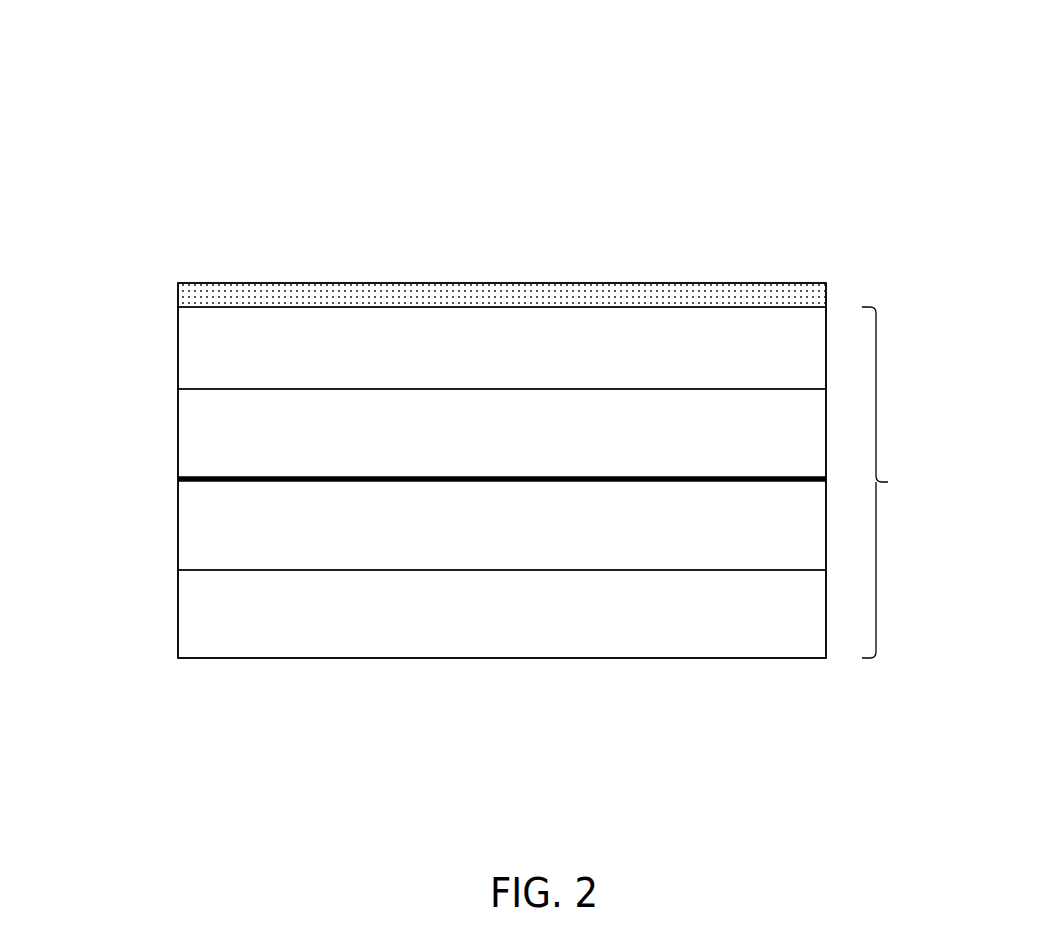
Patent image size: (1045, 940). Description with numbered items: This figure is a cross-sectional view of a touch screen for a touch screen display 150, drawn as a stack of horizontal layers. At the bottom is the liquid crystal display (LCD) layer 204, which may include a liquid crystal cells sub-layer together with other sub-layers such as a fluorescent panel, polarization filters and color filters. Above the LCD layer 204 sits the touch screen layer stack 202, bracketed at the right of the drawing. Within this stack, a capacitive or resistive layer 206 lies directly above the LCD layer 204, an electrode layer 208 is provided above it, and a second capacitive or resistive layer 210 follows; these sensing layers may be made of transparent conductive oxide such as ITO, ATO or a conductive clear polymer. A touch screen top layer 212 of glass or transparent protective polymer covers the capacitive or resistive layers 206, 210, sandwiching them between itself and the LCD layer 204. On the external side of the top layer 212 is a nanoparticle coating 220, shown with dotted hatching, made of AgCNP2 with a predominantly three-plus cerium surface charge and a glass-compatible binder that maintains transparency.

The touch screen display 150 is at (167, 52).
The touch screen layer stack 202 is at (904, 482).
The liquid crystal display (LCD) layer 204 is at (178, 598).
The capacitive or resistive layer 206 is at (178, 538).
The electrode layer 208 is at (178, 474).
The capacitive or resistive layer 210 is at (178, 410).
The touch screen top layer 212 is at (178, 340).
The nanoparticle coating 220 is at (178, 298).